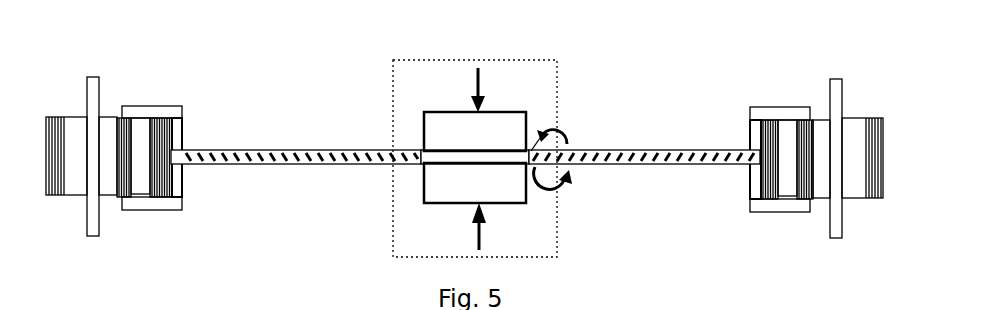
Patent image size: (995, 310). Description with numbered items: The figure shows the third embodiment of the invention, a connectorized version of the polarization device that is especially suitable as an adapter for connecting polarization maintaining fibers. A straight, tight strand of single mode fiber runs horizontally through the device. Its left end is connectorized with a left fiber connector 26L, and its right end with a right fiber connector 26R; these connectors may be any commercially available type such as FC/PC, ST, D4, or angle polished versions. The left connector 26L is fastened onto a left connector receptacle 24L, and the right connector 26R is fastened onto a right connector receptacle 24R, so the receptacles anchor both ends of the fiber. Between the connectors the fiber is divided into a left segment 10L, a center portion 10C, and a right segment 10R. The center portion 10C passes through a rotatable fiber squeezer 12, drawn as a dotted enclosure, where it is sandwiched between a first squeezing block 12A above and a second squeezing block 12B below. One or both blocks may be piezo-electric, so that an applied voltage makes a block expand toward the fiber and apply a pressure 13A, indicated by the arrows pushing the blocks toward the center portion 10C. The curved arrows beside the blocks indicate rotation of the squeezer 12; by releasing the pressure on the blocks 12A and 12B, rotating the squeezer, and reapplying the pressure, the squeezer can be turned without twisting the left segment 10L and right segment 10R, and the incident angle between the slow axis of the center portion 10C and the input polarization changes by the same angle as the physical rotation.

The left connector receptacle 24L is at (67, 110).
The right connector receptacle 24R is at (868, 110).
The left fiber connector 26L is at (183, 135).
The right fiber connector 26R is at (746, 129).
The left segment 10L is at (280, 168).
The right segment 10R is at (640, 168).
The center portion of fiber strand 10C is at (424, 163).
The rotatable fiber squeezer 12 is at (402, 90).
The first squeezing block 12A is at (503, 131).
The second squeezing block 12B is at (518, 185).
The pressure 13A is at (468, 88).